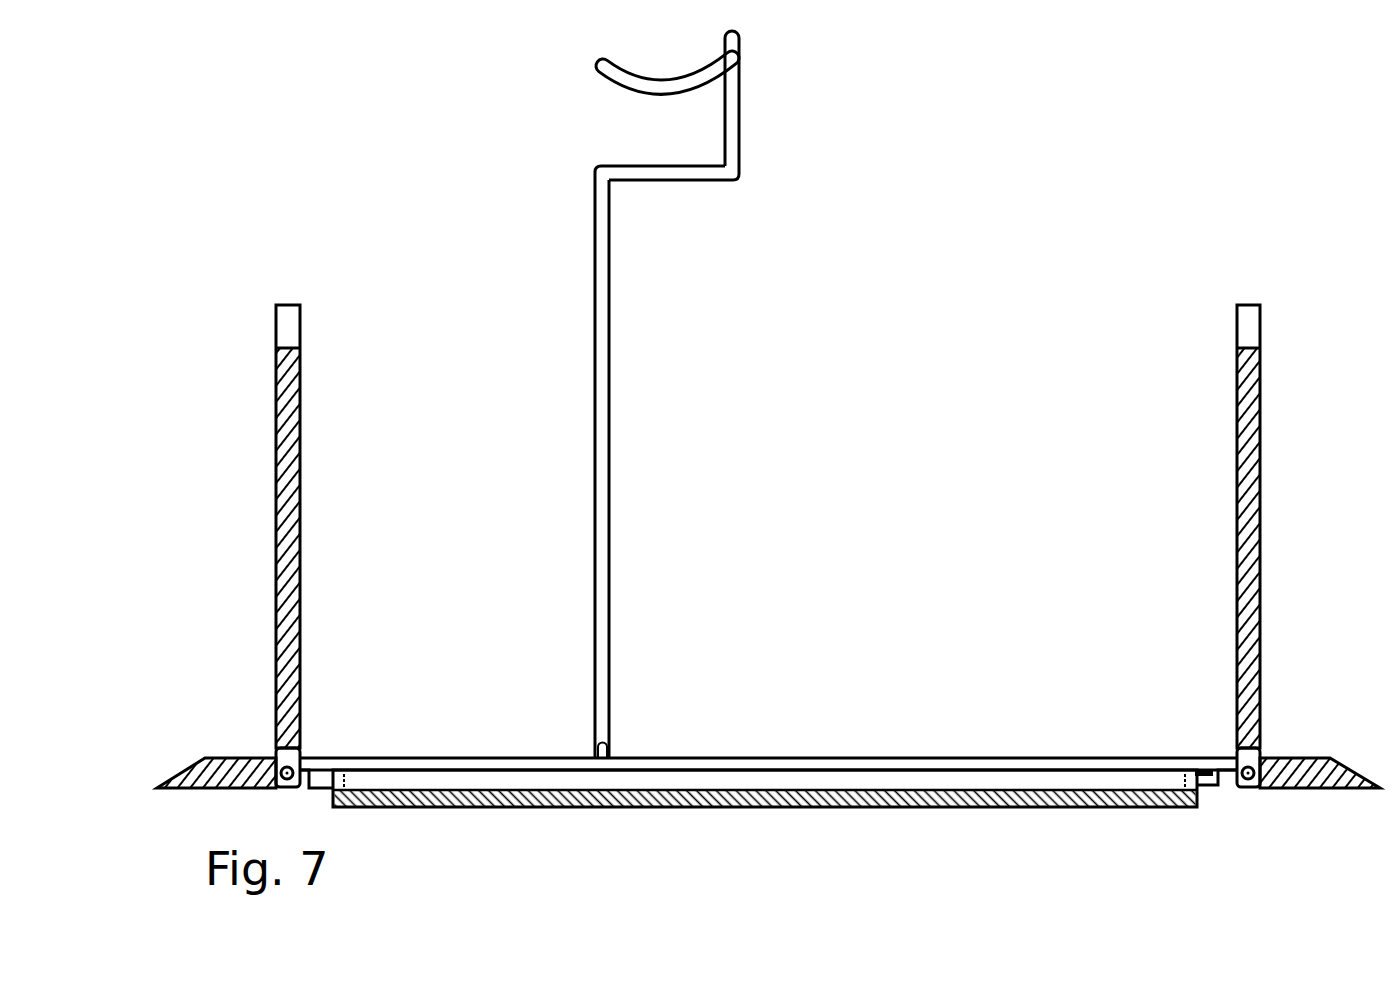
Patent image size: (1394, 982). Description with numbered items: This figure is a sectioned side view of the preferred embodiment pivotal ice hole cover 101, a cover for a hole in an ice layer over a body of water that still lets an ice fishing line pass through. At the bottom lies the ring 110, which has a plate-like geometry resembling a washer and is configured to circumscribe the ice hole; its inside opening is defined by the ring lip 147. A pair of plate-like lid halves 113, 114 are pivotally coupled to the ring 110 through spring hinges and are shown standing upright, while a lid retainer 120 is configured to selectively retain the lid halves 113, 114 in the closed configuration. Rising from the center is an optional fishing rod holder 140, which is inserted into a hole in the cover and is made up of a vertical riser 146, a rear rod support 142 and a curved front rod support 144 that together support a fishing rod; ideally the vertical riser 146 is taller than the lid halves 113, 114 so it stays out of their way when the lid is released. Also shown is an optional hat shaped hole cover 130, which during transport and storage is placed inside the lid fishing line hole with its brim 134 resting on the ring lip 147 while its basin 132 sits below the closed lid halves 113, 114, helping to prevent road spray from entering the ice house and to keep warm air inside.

The pivotal ice hole cover 101 is at (298, 142).
The ring 110 is at (1307, 750).
The lid half 113 is at (285, 322).
The lid half 114 is at (1248, 322).
The lid retainer 120 is at (265, 752).
The hat shaped hole cover 130 is at (810, 795).
The basin 132 is at (822, 800).
The brim 134 is at (1202, 770).
The fishing rod holder 140 is at (631, 394).
The rear rod support 142 is at (655, 182).
The curved front rod support 144 is at (604, 74).
The vertical riser 146 is at (598, 557).
The ring lip 147 is at (1214, 788).